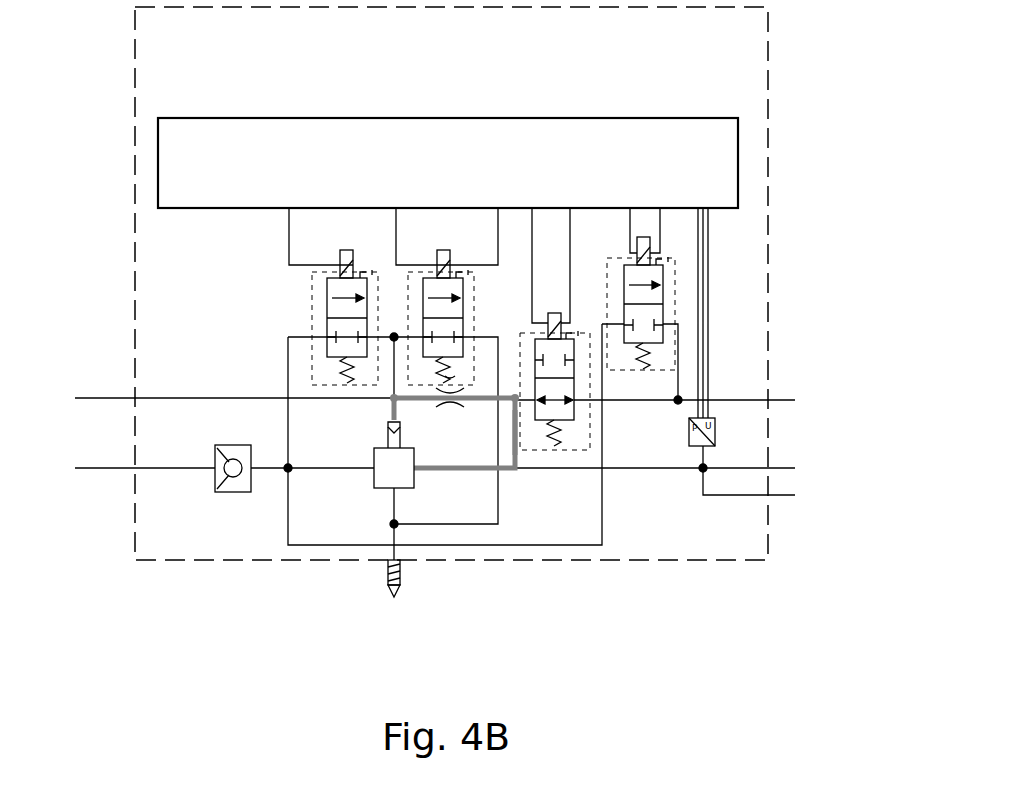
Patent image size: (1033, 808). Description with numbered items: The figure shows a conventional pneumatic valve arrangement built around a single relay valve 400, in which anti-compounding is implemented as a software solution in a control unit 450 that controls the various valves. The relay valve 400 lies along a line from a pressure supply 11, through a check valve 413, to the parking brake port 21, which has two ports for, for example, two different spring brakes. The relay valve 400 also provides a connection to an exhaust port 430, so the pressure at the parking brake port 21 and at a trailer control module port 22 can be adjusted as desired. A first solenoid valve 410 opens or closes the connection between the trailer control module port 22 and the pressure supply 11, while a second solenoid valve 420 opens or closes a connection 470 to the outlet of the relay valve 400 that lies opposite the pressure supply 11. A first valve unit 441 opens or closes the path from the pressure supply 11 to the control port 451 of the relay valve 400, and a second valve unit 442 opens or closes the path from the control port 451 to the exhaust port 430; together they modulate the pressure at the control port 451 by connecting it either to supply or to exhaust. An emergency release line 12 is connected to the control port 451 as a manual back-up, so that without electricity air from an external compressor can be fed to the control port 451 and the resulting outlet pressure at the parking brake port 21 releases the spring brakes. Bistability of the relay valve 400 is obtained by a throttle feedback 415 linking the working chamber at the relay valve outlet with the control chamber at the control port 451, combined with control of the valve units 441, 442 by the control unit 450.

The control unit 450 is at (738, 138).
The first solenoid valve 410 is at (663, 268).
The first valve unit 441 is at (327, 283).
The second valve unit 442 is at (422, 320).
The control port 451 is at (388, 437).
The emergency release line 12 is at (212, 398).
The second solenoid valve 420 is at (575, 392).
The trailer control module port 22 is at (676, 400).
The pressure supply 11 is at (206, 468).
The parking brake port 21 is at (676, 482).
The check valve 413 is at (221, 490).
The relay valve 400 is at (380, 478).
The exhaust port 430 is at (389, 590).
The throttle feedback 415 is at (446, 405).
The connection 470 is at (520, 432).